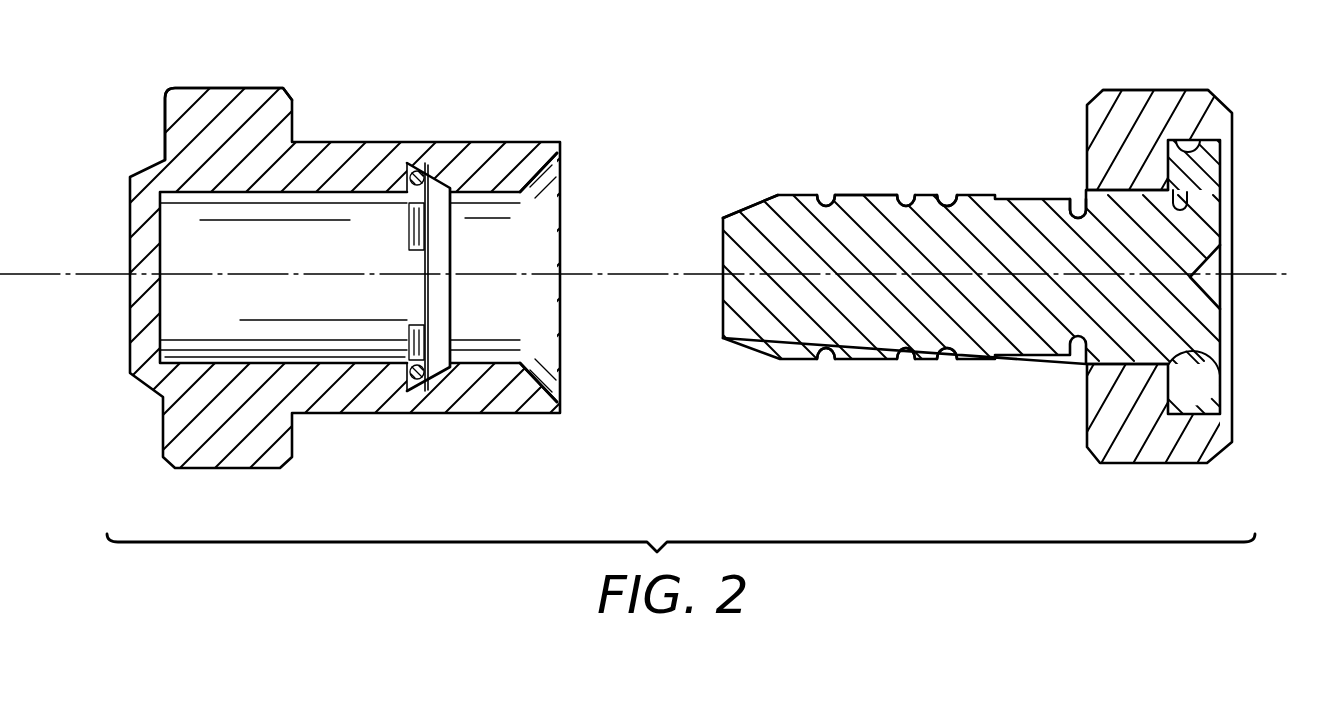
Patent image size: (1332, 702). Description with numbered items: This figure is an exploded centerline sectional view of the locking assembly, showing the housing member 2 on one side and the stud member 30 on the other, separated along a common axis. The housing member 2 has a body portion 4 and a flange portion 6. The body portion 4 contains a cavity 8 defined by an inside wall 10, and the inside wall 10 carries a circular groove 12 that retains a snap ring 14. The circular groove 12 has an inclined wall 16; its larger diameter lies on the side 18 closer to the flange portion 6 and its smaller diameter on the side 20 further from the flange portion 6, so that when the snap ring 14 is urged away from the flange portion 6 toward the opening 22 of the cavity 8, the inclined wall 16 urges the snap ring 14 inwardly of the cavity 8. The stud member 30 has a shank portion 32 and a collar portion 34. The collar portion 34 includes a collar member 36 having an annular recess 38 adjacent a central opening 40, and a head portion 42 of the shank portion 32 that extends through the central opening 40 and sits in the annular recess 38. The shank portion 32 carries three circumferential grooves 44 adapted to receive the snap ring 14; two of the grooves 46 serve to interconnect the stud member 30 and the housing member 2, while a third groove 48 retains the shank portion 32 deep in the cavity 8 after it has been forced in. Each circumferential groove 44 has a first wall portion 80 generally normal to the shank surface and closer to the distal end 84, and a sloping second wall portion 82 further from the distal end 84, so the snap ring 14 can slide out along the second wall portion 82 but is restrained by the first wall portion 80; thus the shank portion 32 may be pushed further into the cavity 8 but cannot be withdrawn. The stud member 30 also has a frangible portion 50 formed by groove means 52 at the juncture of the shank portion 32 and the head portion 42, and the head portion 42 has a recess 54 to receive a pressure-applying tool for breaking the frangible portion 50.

The housing member 2 is at (382, 46).
The body portion 4 is at (477, 142).
The flange portion 6 is at (177, 100).
The cavity 8 is at (515, 246).
The inside wall 10 is at (283, 280).
The circular groove 12 is at (440, 183).
The snap ring 14 is at (418, 165).
The inclined wall 16 is at (423, 322).
The side of the circular groove closer to the flange portion 18 is at (418, 388).
The side of the circular groove further from the flange portion 20 is at (445, 370).
The opening 22 is at (562, 187).
The stud member 30 is at (855, 91).
The shank portion 32 is at (757, 202).
The collar portion 34 is at (1170, 88).
The collar member 36 is at (1140, 88).
The annular recess 38 is at (1202, 150).
The central opening 40 is at (1076, 212).
The head portion 42 is at (1212, 218).
The circumferential groove 44 is at (832, 354).
The grooves 46 is at (897, 195).
The third groove 48 is at (957, 202).
The frangible portion 50 is at (1186, 206).
The groove means 52 is at (1172, 360).
The recess 54 is at (1193, 276).
The first wall portion 80 is at (823, 197).
The second wall portion 82 is at (902, 202).
The distal end 84 is at (721, 245).